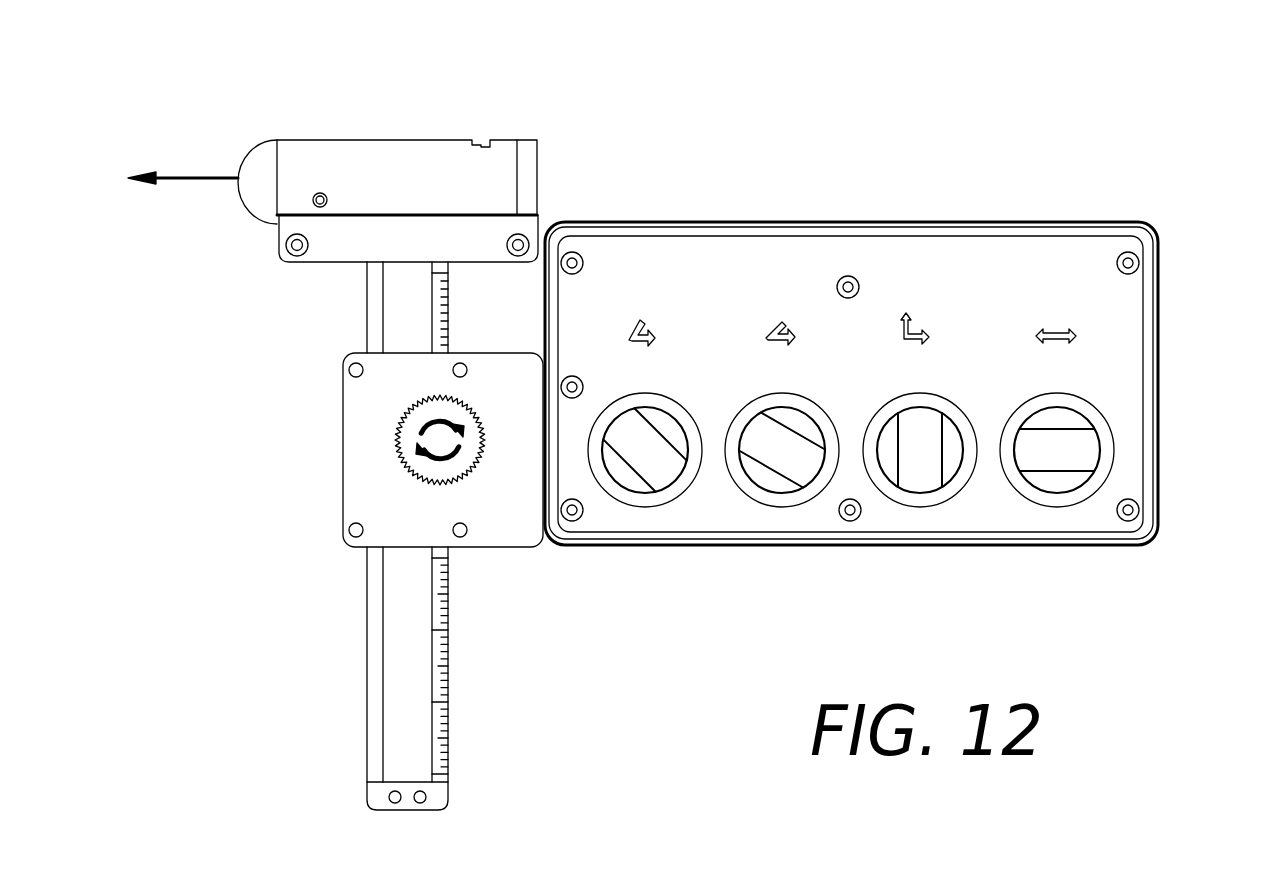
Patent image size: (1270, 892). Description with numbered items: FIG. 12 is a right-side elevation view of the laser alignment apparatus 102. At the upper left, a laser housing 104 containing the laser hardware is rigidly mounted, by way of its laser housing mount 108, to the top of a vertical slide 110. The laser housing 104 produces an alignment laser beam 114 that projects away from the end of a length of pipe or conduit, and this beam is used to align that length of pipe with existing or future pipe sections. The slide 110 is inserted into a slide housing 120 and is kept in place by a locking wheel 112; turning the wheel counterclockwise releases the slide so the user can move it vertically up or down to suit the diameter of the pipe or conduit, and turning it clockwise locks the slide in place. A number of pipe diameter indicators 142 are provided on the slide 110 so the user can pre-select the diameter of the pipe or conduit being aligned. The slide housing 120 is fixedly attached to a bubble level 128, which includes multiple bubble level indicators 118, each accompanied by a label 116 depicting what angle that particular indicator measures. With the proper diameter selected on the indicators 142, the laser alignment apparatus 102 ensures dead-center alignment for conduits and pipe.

The laser alignment apparatus 102 is at (906, 327).
The laser housing 104 is at (415, 140).
The laser housing mount 108 is at (280, 243).
The vertical slide 110 is at (368, 598).
The locking wheel 112 is at (456, 483).
The alignment laser beam 114 is at (198, 178).
The label 116 is at (1047, 357).
The bubble level indicators 118 is at (1053, 493).
The slide housing 120 is at (343, 420).
The bubble level 128 is at (1160, 294).
The pipe diameter indicators 142 is at (462, 574).